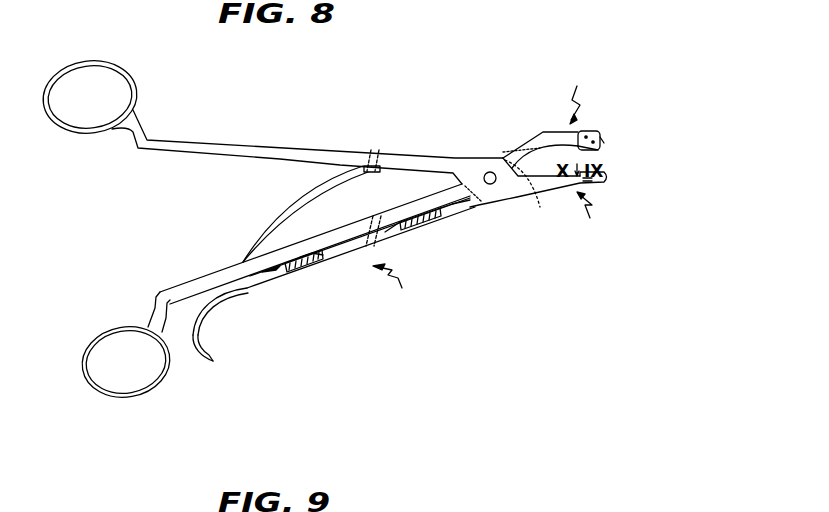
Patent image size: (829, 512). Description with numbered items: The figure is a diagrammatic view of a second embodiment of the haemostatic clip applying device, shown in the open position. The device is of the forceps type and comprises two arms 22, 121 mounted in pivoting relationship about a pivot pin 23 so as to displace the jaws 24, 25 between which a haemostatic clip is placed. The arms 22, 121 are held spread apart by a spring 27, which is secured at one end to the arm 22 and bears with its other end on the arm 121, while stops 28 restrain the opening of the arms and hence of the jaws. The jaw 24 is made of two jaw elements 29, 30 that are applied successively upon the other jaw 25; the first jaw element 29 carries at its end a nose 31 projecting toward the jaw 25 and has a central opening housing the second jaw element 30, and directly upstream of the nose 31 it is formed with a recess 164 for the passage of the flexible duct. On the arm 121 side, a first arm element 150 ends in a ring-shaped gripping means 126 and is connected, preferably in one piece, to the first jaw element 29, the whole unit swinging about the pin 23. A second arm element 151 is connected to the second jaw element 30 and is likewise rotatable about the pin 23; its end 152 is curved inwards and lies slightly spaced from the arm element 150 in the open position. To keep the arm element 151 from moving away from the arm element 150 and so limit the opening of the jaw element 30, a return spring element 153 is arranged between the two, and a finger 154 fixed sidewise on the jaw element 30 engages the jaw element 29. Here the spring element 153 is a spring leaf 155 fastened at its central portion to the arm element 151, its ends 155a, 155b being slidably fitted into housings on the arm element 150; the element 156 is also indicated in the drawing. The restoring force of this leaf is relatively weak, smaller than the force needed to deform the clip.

The arm 22 is at (205, 144).
The pivot pin 23 is at (466, 168).
The jaw 24 is at (576, 93).
The jaw 25 is at (539, 210).
The spring 27 is at (284, 213).
The stops 28 is at (493, 170).
The first jaw element 29 is at (530, 142).
The second jaw element 30 is at (600, 152).
The nose 31 is at (601, 144).
The arm 121 is at (401, 288).
The ring-shaped gripping means 126 is at (82, 366).
The first arm element 150 is at (200, 278).
The second arm element 151 is at (403, 258).
The end 152 is at (190, 343).
The return spring element 153 is at (257, 297).
The finger 154 is at (531, 196).
The spring leaf 155 is at (402, 238).
The end of spring leaf 155a is at (286, 270).
The end of spring leaf 155b is at (437, 207).
The latch tab 156 is at (310, 267).
The recess 164 is at (577, 132).